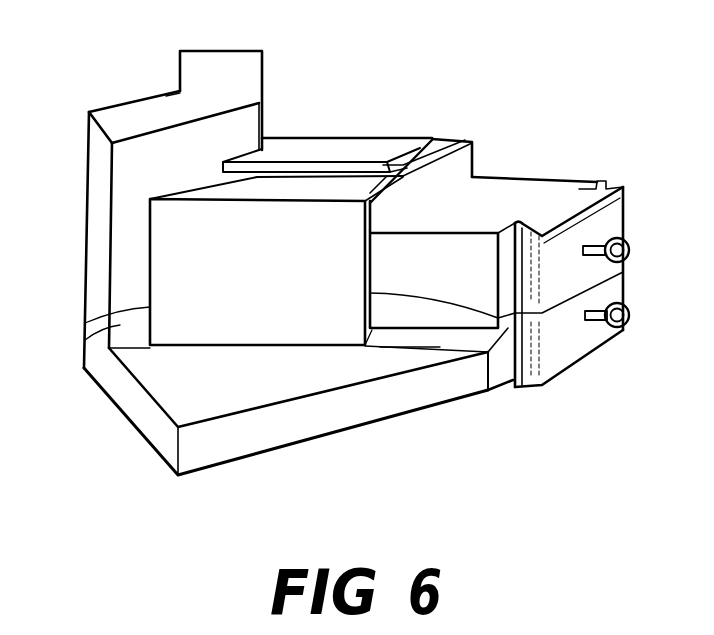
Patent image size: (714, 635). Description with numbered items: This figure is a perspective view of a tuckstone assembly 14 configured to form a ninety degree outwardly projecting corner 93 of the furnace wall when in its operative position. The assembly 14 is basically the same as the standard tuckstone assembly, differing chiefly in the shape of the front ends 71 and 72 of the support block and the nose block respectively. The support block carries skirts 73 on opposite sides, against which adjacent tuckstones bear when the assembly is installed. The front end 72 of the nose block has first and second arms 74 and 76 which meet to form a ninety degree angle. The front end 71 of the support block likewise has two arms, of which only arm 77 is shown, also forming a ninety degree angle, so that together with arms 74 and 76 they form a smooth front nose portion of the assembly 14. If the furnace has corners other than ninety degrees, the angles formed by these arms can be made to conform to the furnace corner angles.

The tuckstone assembly 14 is at (315, 490).
The front end of block 26 71 is at (266, 249).
The front end of block 37 72 is at (90, 215).
The skirt 73 is at (173, 400).
The first arm 74 is at (112, 115).
The second arm 76 is at (218, 62).
The arm 77 is at (96, 338).
The outwardly projecting corner 93 is at (155, 93).